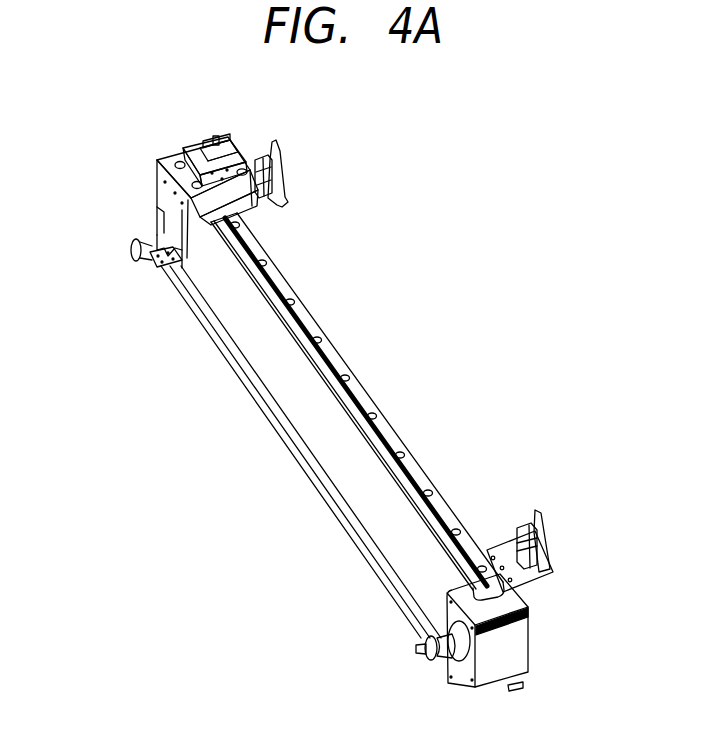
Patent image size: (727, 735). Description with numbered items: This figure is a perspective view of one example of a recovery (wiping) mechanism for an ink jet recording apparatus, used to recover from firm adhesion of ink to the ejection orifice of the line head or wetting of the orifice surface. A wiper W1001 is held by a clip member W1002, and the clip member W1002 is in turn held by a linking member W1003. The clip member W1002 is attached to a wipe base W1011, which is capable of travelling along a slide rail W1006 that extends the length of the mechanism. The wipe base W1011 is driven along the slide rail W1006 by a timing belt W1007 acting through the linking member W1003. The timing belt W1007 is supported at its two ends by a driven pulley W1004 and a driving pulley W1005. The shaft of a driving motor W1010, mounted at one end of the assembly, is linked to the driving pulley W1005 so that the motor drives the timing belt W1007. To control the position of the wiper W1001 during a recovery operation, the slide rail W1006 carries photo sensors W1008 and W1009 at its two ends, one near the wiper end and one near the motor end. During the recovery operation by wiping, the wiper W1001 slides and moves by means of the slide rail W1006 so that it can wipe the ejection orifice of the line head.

The wiper W1001 is at (228, 150).
The clip member W1002 is at (262, 208).
The linking member W1003 is at (157, 199).
The driven pulley W1004 is at (133, 260).
The driving pulley W1005 is at (420, 650).
The slide rail W1006 is at (332, 355).
The timing belt W1007 is at (200, 322).
The photo sensor W1008 is at (290, 168).
The photo sensor W1009 is at (550, 548).
The driving motor W1010 is at (523, 653).
The wipe base W1011 is at (196, 198).